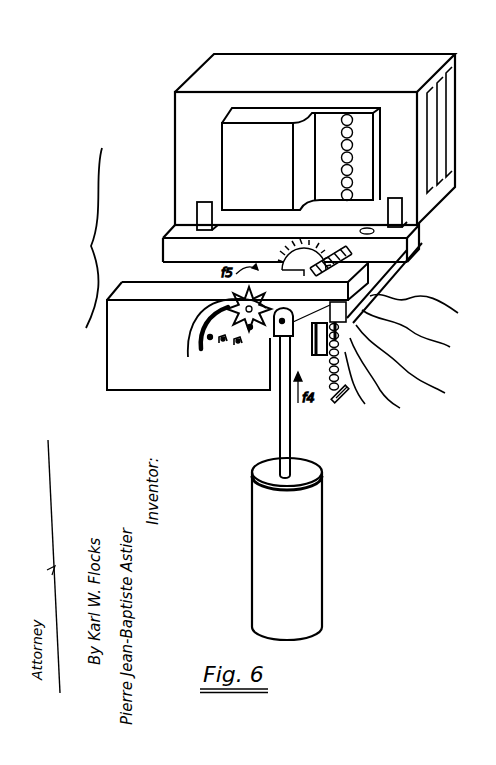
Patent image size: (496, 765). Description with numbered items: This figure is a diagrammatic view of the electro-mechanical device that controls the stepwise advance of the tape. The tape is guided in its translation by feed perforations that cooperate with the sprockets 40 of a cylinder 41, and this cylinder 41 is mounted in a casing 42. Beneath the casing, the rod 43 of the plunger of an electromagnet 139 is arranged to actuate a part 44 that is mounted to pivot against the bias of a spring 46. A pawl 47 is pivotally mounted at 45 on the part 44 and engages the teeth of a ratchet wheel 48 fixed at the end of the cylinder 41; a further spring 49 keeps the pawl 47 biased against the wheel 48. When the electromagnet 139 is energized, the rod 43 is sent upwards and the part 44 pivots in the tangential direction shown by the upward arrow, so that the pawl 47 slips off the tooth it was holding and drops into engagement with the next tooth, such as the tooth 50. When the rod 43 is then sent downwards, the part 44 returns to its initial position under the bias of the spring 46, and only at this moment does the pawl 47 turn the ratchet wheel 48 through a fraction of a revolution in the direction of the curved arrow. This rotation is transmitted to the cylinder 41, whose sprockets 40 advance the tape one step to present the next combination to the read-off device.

The sprockets 40 is at (418, 237).
The cylinder 41 is at (385, 266).
The casing 42 is at (261, 191).
The rod 43 is at (291, 433).
The part 44 is at (193, 330).
The pivot 45 is at (208, 342).
The spring 46 is at (340, 370).
The pawl 47 is at (222, 343).
The ratchet wheel 48 is at (235, 296).
The spring 49 is at (238, 346).
The tooth 50 is at (250, 330).
The electromagnet 139 is at (280, 523).